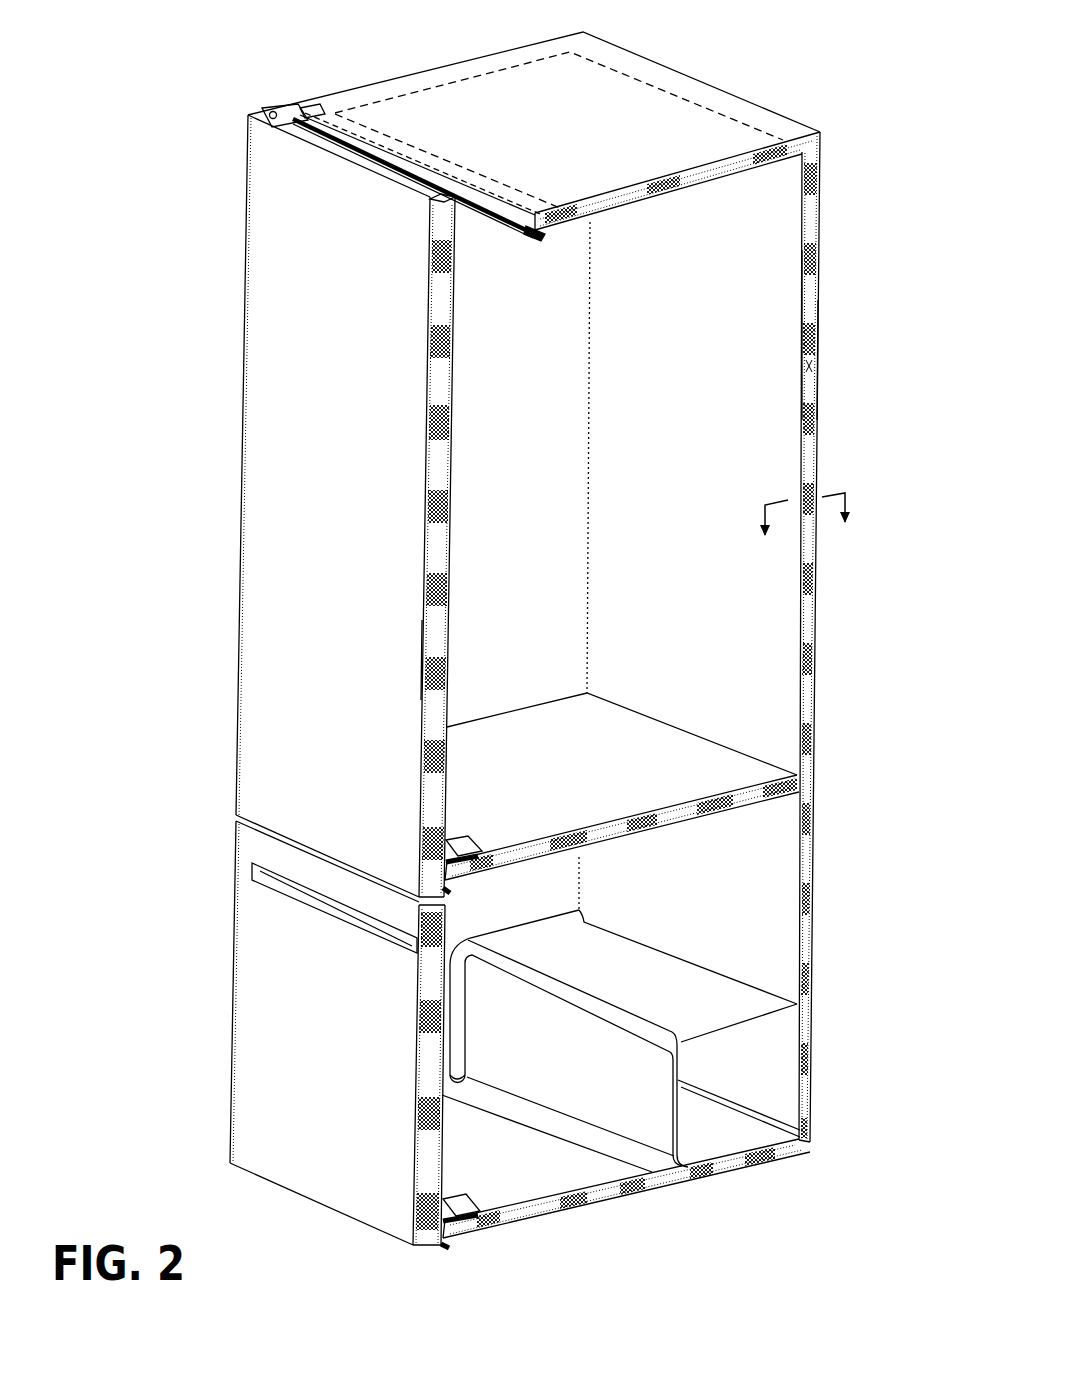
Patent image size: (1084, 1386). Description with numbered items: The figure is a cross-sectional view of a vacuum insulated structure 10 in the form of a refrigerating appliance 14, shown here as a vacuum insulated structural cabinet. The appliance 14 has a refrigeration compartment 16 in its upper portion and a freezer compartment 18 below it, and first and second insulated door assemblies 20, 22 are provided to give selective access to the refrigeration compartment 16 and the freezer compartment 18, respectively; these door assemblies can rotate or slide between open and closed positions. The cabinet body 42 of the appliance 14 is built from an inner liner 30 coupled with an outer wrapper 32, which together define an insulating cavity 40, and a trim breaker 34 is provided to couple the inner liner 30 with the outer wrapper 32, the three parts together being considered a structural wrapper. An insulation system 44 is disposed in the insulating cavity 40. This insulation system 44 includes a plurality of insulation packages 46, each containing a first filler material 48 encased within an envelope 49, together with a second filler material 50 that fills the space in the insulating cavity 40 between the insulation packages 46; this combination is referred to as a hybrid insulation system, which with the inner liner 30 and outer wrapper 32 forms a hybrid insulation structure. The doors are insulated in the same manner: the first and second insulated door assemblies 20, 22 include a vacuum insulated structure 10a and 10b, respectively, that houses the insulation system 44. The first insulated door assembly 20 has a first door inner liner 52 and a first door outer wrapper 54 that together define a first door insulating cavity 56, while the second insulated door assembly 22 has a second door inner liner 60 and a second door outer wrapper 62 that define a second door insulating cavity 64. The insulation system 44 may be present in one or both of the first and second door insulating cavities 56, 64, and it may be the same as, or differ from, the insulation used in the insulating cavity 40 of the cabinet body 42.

The vacuum insulated structure 10 is at (605, 578).
The vacuum insulated structure of first door 10a is at (237, 453).
The vacuum insulated structure of second door 10b is at (263, 1042).
The refrigerating appliance 14 is at (268, 102).
The refrigeration compartment 16 is at (675, 675).
The freezer compartment 18 is at (712, 935).
The first insulated door assembly 20 is at (278, 168).
The second insulated door assembly 22 is at (265, 1042).
The inner liner 30 is at (708, 167).
The outer wrapper 32 is at (627, 185).
The trim breaker 34 is at (493, 222).
The insulating cavity 40 is at (793, 140).
The cabinet body 42 is at (835, 608).
The insulation system 44 is at (790, 310).
The insulation packages 46 is at (821, 345).
The first filler material 48 is at (816, 332).
The envelope 49 is at (802, 367).
The second filler material 50 is at (432, 302).
The first door inner liner 52 is at (297, 545).
The first door outer wrapper 54 is at (246, 237).
The first door insulating cavity 56 is at (432, 658).
The second door inner liner 60 is at (418, 1180).
The second door outer wrapper 62 is at (337, 1165).
The second door insulating cavity 64 is at (418, 996).